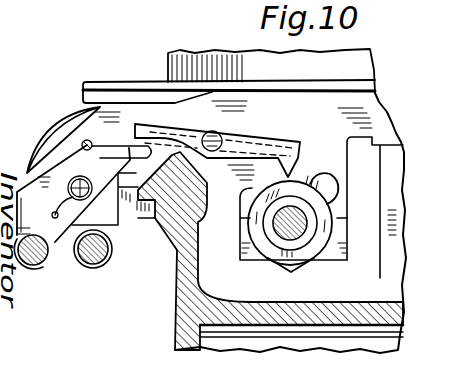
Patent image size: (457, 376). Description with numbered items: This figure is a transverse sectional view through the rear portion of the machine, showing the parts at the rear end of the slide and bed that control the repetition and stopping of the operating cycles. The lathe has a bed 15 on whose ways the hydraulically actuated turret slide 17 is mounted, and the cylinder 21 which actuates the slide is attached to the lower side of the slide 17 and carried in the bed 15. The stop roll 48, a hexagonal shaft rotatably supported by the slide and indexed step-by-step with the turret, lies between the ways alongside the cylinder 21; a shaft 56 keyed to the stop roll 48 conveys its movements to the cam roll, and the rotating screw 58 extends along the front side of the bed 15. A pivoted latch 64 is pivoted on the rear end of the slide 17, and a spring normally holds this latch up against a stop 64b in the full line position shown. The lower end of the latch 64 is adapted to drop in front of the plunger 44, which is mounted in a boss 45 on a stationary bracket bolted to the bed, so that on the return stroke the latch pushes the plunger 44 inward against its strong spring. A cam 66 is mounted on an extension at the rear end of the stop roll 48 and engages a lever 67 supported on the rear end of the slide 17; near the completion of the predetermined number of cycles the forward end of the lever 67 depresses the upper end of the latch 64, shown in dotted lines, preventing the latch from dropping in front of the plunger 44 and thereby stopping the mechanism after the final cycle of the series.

The turret slide 17 is at (133, 90).
The pivoted latch 64 is at (18, 192).
The stop 64b is at (58, 127).
The lever 67 is at (243, 143).
The cam 66 is at (332, 190).
The stop roll 48 is at (308, 216).
The shaft 56 is at (285, 230).
The cylinder 21 is at (392, 245).
The bed 15 is at (176, 258).
The plunger 44 is at (43, 260).
The rotating screw 58 is at (109, 238).
The boss 45 is at (448, 7).